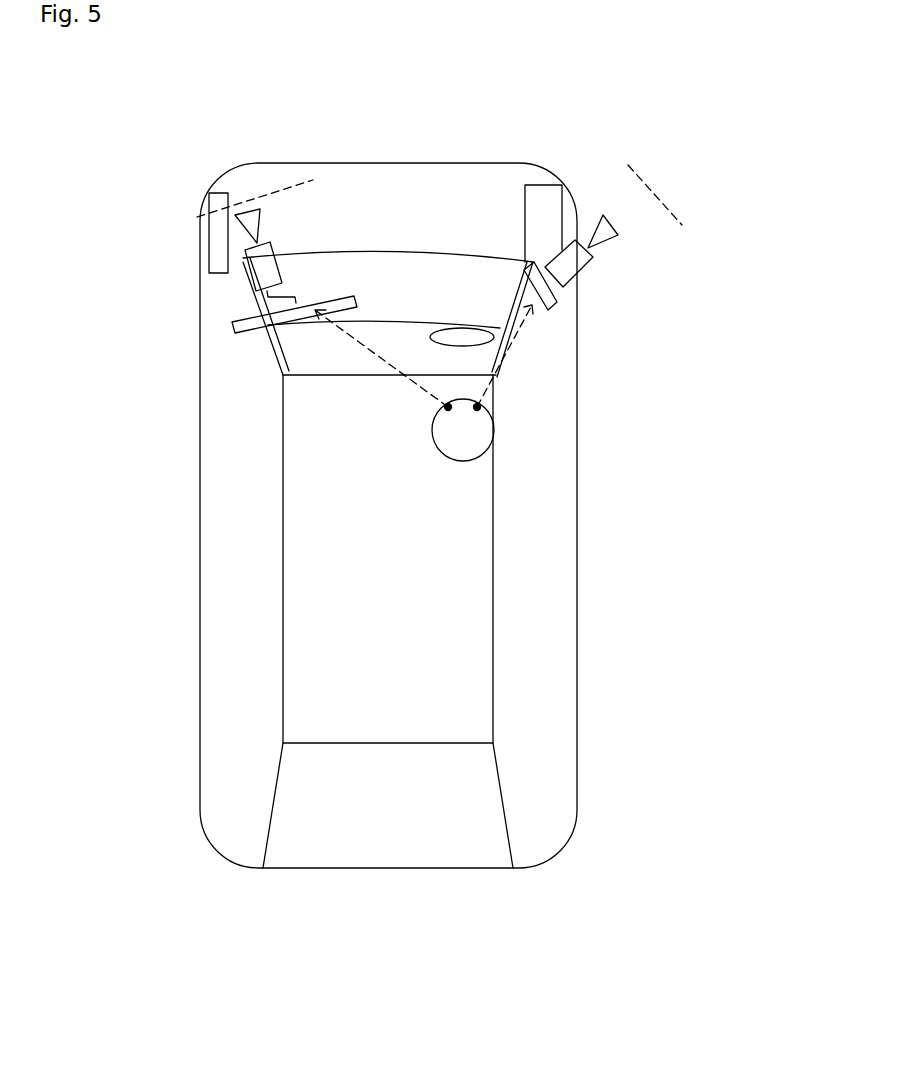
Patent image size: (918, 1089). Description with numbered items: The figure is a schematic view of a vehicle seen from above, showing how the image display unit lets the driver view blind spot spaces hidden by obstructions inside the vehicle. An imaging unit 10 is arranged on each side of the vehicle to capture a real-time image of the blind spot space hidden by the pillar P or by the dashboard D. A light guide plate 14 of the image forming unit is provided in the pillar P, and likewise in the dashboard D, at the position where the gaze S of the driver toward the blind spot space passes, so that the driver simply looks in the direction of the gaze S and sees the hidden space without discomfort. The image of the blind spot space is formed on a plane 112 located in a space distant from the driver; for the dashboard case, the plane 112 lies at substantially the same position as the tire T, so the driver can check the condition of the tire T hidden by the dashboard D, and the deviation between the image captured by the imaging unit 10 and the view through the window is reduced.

The imaging unit 10 is at (245, 207).
The plane 112 is at (291, 187).
The light guide plate 14 is at (233, 327).
The dashboard D is at (340, 266).
The pillar P is at (520, 280).
The tire T is at (207, 262).
The gaze S is at (415, 392).